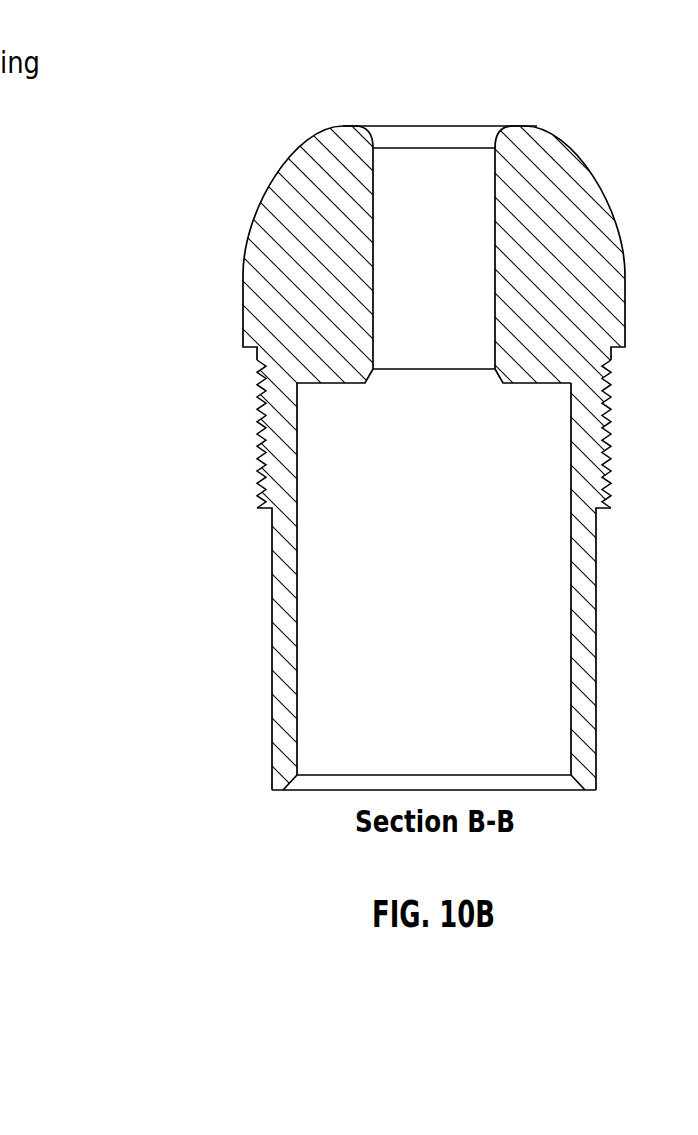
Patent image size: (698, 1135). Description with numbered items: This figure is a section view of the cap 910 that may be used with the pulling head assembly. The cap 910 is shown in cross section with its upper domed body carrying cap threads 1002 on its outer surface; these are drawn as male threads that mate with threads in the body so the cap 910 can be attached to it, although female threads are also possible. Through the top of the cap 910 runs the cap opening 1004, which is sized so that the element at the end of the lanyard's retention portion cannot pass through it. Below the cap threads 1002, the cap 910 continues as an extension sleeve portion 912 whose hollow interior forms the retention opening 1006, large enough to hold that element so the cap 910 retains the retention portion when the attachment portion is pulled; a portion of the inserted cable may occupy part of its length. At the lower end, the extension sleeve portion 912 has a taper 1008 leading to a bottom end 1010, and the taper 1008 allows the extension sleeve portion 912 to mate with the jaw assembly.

The cap 910 is at (262, 206).
The cap opening 1004 is at (465, 114).
The cap threads 1002 is at (247, 446).
The extension sleeve portion 912 is at (270, 583).
The retention opening 1006 is at (332, 648).
The taper 1008 is at (323, 784).
The bottom end 1010 is at (536, 797).